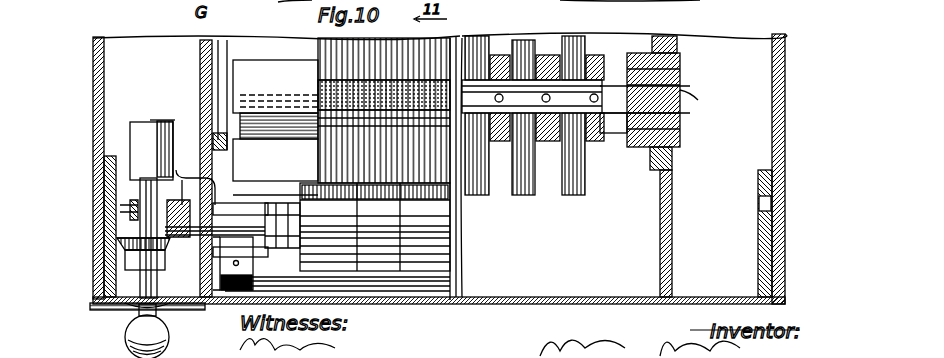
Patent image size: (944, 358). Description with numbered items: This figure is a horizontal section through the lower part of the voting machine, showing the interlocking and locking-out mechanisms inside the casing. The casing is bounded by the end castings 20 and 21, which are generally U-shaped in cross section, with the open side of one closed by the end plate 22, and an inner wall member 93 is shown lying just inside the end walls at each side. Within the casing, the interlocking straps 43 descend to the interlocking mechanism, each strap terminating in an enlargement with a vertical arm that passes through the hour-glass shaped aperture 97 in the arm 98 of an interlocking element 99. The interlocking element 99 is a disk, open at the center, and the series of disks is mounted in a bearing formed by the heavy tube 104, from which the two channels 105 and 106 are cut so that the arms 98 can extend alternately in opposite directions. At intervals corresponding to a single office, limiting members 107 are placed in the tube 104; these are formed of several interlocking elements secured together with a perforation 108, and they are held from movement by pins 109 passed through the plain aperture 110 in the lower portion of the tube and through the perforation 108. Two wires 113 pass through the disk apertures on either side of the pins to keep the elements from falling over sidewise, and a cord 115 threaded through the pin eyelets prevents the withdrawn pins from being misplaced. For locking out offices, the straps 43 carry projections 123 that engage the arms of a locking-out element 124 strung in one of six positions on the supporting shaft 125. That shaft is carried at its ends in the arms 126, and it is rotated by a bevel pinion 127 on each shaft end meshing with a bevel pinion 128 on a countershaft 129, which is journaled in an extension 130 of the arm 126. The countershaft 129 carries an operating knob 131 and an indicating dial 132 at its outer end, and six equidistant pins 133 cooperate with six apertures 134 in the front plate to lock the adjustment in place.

The end casting 20 is at (201, 83).
The end casting 21 is at (672, 176).
The end plate 22 is at (94, 107).
The interlocking strap 43 is at (318, 84).
The inner casing wall 93 is at (113, 152).
The hour-glass shaped aperture 97 is at (585, 186).
The arm 98 is at (562, 195).
The interlocking element 99 is at (622, 1).
The tube 104 is at (682, 59).
The channel 105 is at (656, 172).
The channel 106 is at (652, 45).
The limiting member 107 is at (626, 145).
The perforation 108 is at (541, 96).
The pin 109 is at (497, 195).
The plain aperture 110 is at (500, 36).
The wire 113 is at (703, 100).
The cord 115 is at (312, 4).
The projection 123 is at (318, 158).
The locking-out element 124 is at (402, 216).
The supporting shaft 125 is at (265, 228).
The arm 126 is at (210, 192).
The bevel pinion 127 is at (190, 172).
The bevel pinion 128 is at (125, 252).
The countershaft 129 is at (135, 210).
The extension 130 is at (151, 150).
The operating knob 131 is at (128, 340).
The indicating dial 132 is at (240, 298).
The pin 133 is at (128, 311).
The aperture 134 is at (96, 301).